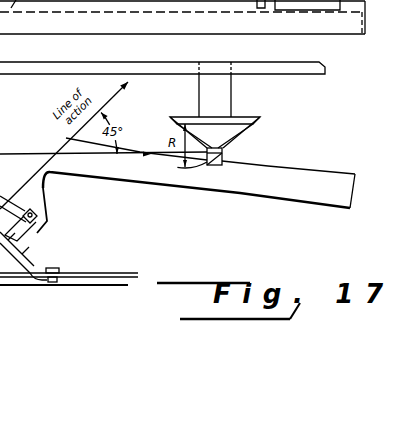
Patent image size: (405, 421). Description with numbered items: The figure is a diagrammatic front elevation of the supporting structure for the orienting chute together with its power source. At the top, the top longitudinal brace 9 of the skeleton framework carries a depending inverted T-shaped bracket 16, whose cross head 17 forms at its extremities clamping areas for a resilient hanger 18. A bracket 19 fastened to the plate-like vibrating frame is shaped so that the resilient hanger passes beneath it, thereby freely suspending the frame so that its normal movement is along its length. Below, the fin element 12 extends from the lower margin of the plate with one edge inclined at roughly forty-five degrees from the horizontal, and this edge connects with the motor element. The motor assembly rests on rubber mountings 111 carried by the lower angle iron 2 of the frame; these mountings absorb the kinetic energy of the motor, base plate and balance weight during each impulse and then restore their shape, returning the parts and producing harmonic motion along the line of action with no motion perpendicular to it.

The lower angle iron 2 is at (107, 275).
The top longitudinal brace 9 is at (21, 67).
The fin element 12 is at (42, 197).
The inverted T-shaped bracket 16 is at (232, 97).
The cross head 17 is at (238, 118).
The resilient hanger 18 is at (236, 140).
The bracket 19 is at (222, 156).
The rubber mounting 111 is at (10, 240).